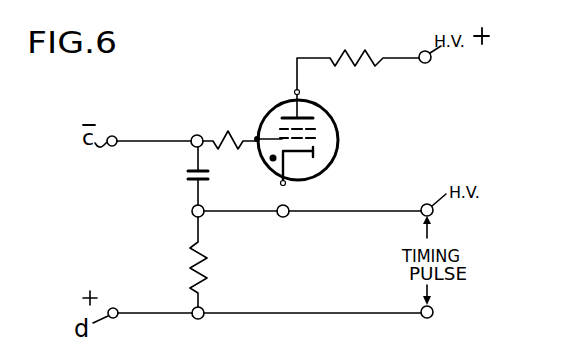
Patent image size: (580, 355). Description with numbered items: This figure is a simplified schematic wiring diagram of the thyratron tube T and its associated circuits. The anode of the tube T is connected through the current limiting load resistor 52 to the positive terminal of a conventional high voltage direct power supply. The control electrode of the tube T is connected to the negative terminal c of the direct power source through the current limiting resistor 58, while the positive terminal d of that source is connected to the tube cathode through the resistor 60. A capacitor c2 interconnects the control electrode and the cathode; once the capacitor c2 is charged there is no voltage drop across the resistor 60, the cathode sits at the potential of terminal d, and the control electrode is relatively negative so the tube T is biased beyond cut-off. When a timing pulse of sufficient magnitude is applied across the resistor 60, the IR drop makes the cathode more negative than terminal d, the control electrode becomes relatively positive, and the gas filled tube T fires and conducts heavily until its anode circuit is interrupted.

The current limiting load resistor 52 is at (355, 48).
The current limiting resistor 58 is at (229, 130).
The resistor 60 is at (205, 276).
The thyratron tube T is at (337, 152).
The capacitor c2 is at (192, 180).